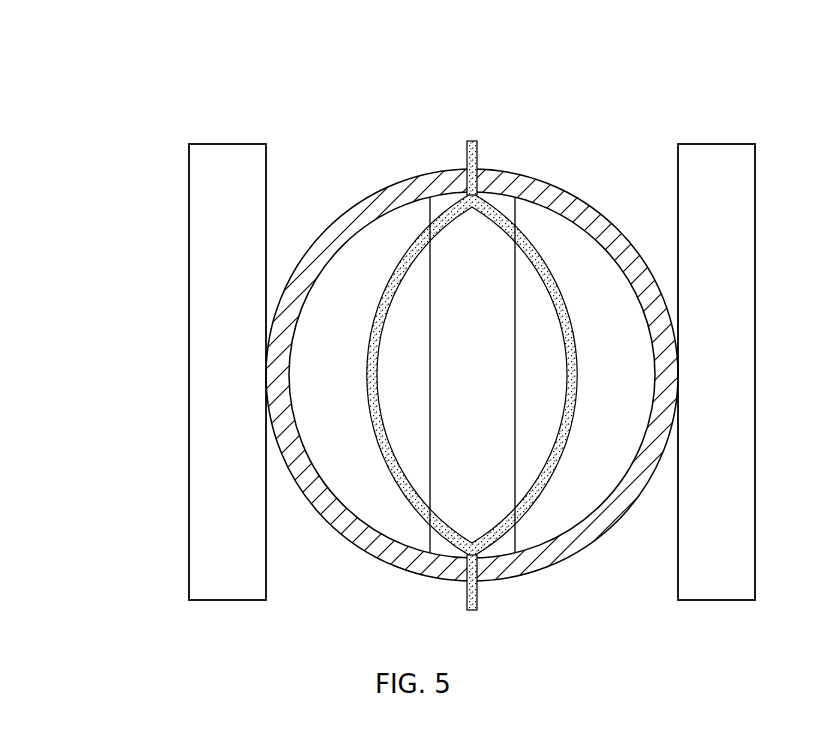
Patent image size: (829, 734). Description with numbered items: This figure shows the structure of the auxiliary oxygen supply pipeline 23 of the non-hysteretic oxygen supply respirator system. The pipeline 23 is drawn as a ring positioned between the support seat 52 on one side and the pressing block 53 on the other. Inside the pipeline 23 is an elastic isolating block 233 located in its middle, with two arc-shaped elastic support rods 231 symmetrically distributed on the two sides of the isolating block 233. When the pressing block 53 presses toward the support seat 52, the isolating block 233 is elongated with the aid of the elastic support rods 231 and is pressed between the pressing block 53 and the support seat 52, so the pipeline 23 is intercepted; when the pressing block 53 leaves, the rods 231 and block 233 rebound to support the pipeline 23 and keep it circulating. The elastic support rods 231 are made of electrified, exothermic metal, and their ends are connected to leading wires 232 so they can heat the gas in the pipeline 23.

The auxiliary oxygen supply pipeline 23 is at (288, 397).
The elastic support rod 231 is at (413, 245).
The leading wire 232 is at (472, 142).
The elastic isolating block 233 is at (460, 455).
The support seat 52 is at (230, 317).
The pressing block 53 is at (708, 173).